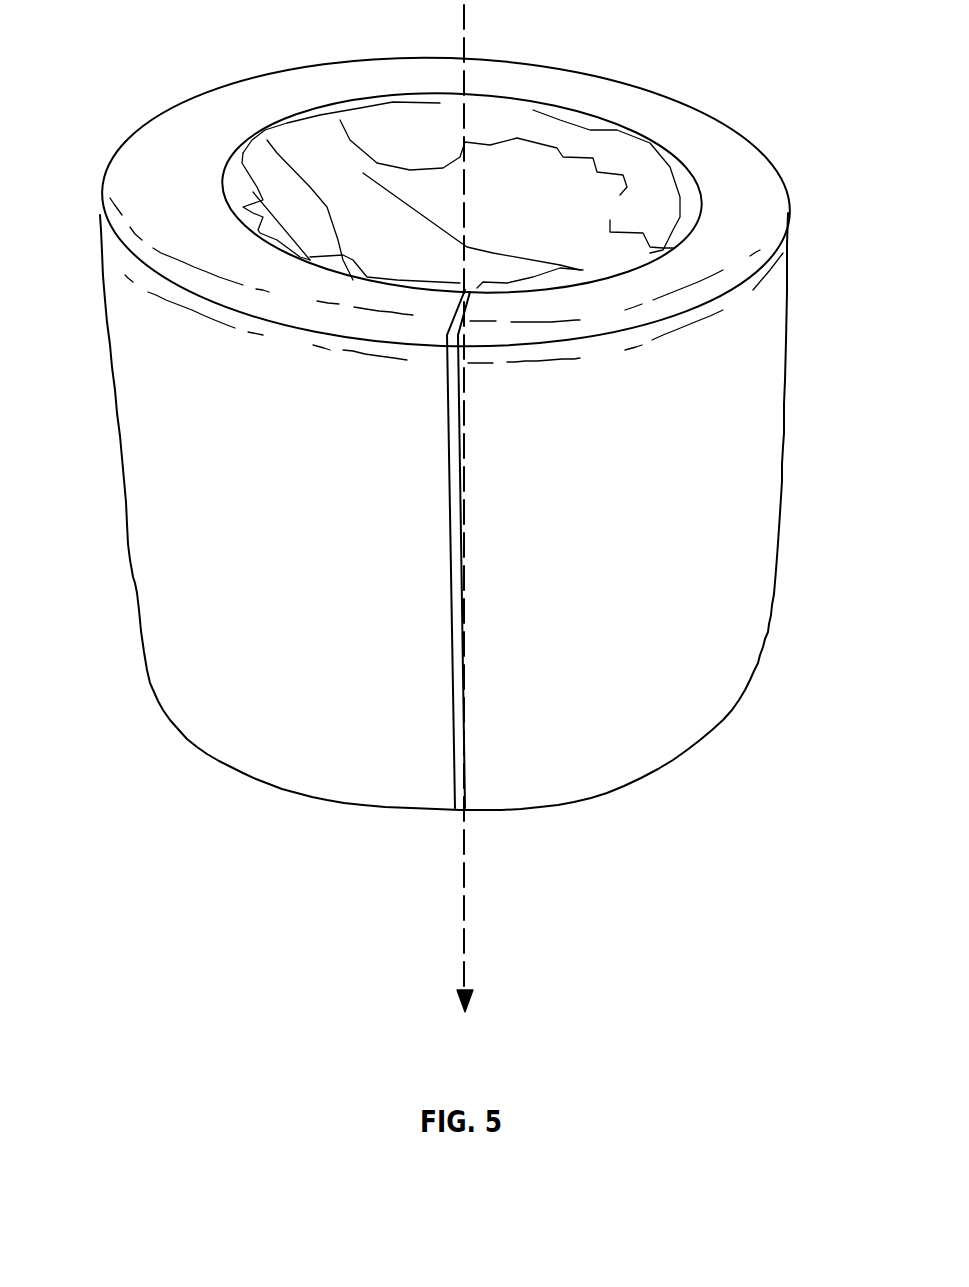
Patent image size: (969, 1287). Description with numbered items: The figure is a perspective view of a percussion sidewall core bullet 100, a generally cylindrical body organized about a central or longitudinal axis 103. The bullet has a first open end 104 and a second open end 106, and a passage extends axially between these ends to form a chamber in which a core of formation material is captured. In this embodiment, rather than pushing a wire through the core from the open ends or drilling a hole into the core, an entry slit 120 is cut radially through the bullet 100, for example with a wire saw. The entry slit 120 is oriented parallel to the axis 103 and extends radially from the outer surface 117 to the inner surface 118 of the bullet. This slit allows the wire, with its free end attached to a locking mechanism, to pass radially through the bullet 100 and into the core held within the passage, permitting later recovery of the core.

The percussion sidewall core bullet 100 is at (462, 508).
The central axis 103 is at (465, 910).
The first open end 104 is at (690, 727).
The second open end 106 is at (753, 163).
The outer surface 117 is at (120, 287).
The inner surface 118 is at (303, 143).
The entry slit 120 is at (463, 753).